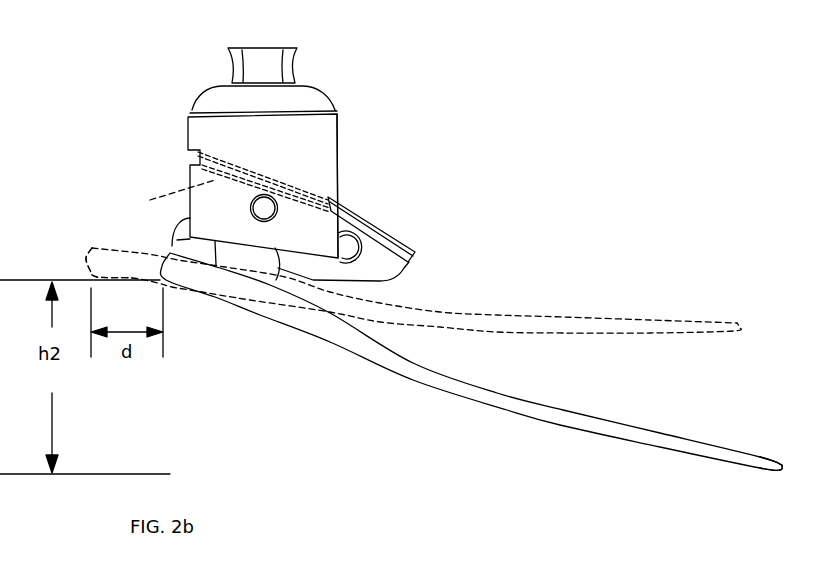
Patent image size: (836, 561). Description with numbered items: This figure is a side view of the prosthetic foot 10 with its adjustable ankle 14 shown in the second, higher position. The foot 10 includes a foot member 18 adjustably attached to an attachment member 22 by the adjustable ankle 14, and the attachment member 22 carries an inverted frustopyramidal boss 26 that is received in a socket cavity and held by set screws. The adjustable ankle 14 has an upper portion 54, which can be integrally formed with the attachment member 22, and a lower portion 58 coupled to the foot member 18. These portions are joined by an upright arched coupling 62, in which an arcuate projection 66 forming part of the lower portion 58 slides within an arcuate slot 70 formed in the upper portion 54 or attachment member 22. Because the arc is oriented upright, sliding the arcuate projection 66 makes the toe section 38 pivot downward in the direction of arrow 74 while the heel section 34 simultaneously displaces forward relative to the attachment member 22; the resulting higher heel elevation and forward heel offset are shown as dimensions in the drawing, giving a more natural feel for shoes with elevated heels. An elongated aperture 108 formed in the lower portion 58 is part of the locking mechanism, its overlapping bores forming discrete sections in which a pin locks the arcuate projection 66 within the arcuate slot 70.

The prosthetic foot 10 is at (515, 290).
The adjustable ankle 14 is at (160, 116).
The foot member 18 is at (584, 410).
The attachment member 22 is at (322, 93).
The inverted frustopyramidal boss 26 is at (228, 65).
The heel section 34 is at (162, 268).
The toe section 38 is at (757, 452).
The upper portion 54 is at (340, 137).
The lower portion 58 is at (400, 277).
The arched coupling 62 is at (150, 168).
The arcuate projection 66 is at (408, 240).
The arcuate slot 70 is at (167, 198).
The downward direction arrow 74 is at (380, 135).
The elongated aperture 108 is at (354, 238).